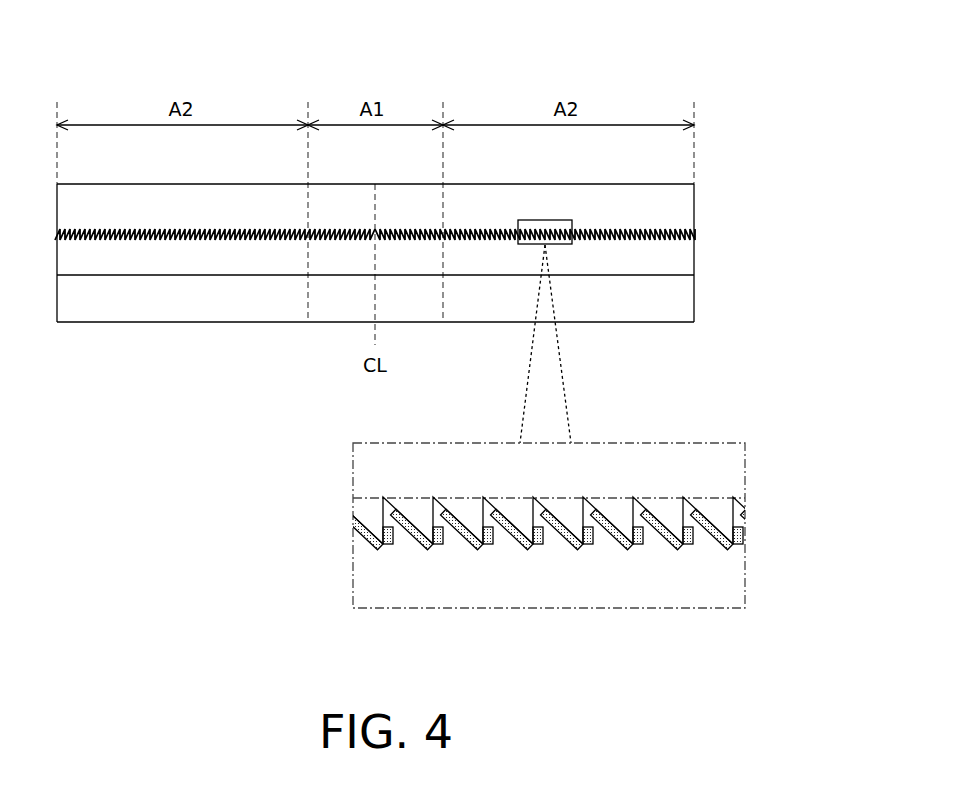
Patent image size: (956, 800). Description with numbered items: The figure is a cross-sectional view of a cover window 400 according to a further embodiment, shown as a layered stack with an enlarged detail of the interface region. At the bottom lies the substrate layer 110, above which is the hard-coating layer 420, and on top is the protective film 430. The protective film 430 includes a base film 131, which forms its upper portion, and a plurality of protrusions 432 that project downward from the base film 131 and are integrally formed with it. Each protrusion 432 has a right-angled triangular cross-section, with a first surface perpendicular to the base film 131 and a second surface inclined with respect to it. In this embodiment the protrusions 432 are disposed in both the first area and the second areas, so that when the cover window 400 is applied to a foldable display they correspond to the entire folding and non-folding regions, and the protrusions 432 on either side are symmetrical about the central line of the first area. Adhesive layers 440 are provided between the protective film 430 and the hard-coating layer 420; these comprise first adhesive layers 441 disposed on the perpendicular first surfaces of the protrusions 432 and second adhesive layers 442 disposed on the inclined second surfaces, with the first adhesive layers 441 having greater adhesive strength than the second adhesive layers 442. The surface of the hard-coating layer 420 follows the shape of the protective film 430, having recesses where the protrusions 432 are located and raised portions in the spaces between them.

The cover window 400 is at (637, 46).
The substrate layer 110 is at (680, 302).
The hard-coating layer 420 is at (680, 257).
The protective film 430 is at (680, 207).
The adhesive layers 440 is at (694, 233).
The first adhesive layers 441 is at (636, 548).
The second adhesive layers 442 is at (613, 548).
The protrusions 432 is at (618, 525).
The base film 131 is at (710, 460).